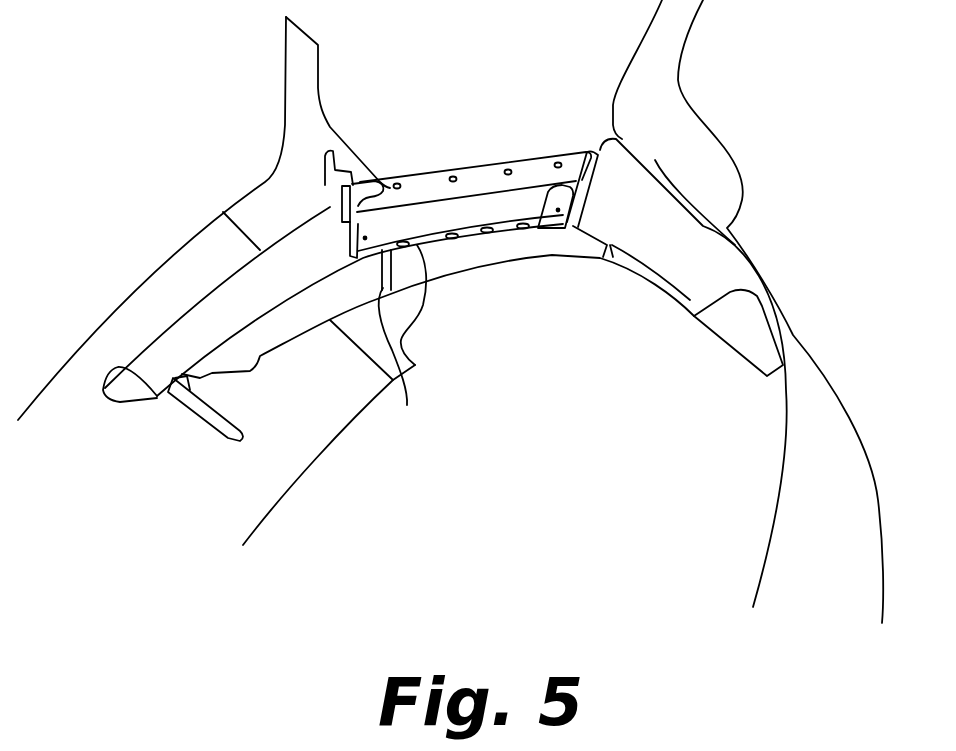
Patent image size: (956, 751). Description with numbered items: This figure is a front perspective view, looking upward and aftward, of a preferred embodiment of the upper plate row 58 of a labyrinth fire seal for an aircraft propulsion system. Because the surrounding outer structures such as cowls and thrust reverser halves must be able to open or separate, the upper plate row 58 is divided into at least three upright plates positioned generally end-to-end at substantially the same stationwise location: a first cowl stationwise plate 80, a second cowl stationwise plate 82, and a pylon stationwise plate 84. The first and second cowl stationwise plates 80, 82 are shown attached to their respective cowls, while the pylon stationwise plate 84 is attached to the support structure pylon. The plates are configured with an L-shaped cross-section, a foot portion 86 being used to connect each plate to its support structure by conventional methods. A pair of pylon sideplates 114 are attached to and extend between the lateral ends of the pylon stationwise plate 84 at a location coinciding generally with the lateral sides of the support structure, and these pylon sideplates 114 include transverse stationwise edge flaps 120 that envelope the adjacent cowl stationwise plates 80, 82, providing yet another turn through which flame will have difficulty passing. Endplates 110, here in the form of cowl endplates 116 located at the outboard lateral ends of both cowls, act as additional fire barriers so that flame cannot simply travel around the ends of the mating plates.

The upper plate row 58 is at (552, 262).
The first cowl stationwise plate 80 is at (183, 333).
The second cowl stationwise plate 82 is at (614, 258).
The pylon stationwise plate 84 is at (418, 222).
The foot portion 86 is at (488, 175).
The endplates 110 is at (600, 138).
The pylon sideplates 114 is at (407, 405).
The cowl endplates 116 is at (197, 396).
The edge flaps 120 is at (342, 215).